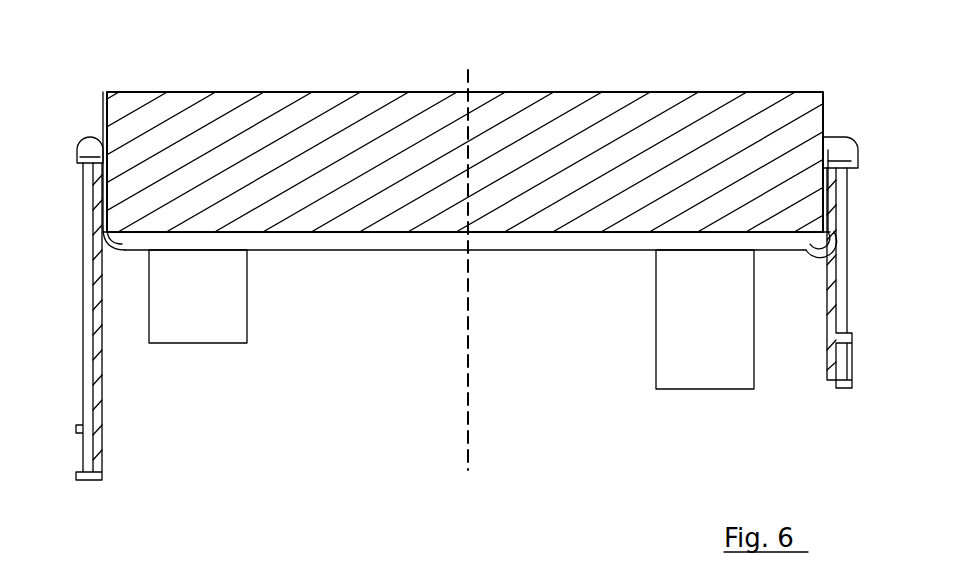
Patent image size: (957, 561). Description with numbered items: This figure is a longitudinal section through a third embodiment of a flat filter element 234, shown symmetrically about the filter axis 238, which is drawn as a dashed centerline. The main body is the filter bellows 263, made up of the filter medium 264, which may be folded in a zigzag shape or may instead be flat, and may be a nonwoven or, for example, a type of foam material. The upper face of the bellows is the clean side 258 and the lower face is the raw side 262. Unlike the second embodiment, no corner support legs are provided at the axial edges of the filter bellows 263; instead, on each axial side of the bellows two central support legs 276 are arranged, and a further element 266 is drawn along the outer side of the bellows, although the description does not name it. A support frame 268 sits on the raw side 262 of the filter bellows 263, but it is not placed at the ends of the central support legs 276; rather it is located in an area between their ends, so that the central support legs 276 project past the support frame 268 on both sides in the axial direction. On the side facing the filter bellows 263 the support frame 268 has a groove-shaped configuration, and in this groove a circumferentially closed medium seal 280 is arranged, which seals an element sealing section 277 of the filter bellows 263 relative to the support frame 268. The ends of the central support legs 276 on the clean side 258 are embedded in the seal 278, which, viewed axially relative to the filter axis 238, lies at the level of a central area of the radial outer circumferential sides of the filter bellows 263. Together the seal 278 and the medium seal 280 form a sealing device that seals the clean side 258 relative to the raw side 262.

The flat filter element 234 is at (87, 88).
The filter axis 238 is at (466, 434).
The clean side 258 is at (382, 88).
The raw side 262 is at (506, 236).
The filter bellows 263 is at (238, 120).
The filter medium 264 is at (655, 118).
The side wall 266 is at (101, 353).
The support frame 268 is at (313, 245).
The central support leg 276 is at (214, 320).
The element sealing section 277 is at (815, 205).
The seal 278 is at (93, 140).
The medium seal 280 is at (815, 254).